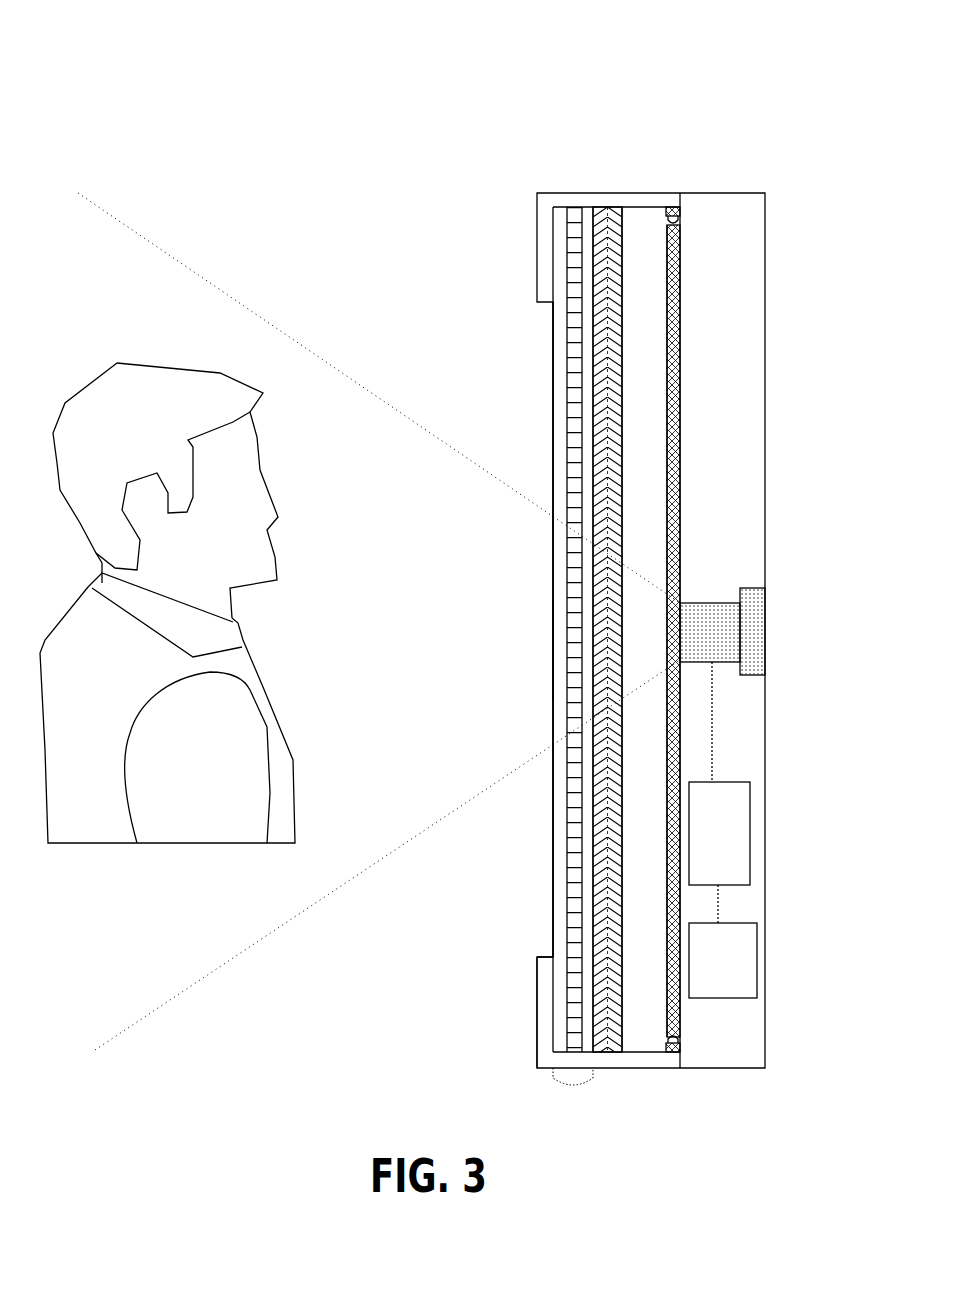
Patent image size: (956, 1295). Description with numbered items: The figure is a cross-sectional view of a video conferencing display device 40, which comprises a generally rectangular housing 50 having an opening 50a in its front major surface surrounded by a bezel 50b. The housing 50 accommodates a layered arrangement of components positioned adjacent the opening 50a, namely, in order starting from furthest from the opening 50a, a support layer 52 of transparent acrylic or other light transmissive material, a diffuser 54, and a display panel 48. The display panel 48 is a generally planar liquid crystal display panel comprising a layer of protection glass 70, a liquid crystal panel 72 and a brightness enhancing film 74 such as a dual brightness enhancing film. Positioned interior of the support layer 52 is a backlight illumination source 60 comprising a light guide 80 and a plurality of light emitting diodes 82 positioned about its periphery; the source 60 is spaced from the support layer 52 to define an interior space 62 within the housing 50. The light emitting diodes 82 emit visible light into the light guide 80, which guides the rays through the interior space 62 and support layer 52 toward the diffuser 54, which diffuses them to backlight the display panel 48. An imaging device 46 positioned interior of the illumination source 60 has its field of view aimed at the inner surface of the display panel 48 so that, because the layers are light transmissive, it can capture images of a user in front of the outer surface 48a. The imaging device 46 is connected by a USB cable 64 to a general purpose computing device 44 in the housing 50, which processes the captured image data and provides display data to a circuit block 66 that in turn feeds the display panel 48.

The video conferencing display device 40 is at (172, 84).
The general purpose computing device 44 is at (725, 832).
The imaging device 46 is at (742, 625).
The display panel 48 is at (572, 1093).
The outer surface of the display panel 48a is at (556, 656).
The housing 50 is at (765, 1010).
The opening 50a is at (535, 847).
The bezel 50b is at (535, 985).
The support layer 52 is at (617, 207).
The diffuser 54 is at (603, 207).
The backlight illumination source 60 is at (653, 240).
The interior space 62 is at (640, 1015).
The USB cable 64 is at (712, 721).
The circuit block 66 is at (740, 952).
The protection glass 70 is at (553, 207).
The liquid crystal panel 72 is at (572, 207).
The brightness enhancing film 74 is at (588, 207).
The light guide 80 is at (680, 375).
The light emitting diodes 82 is at (676, 1055).